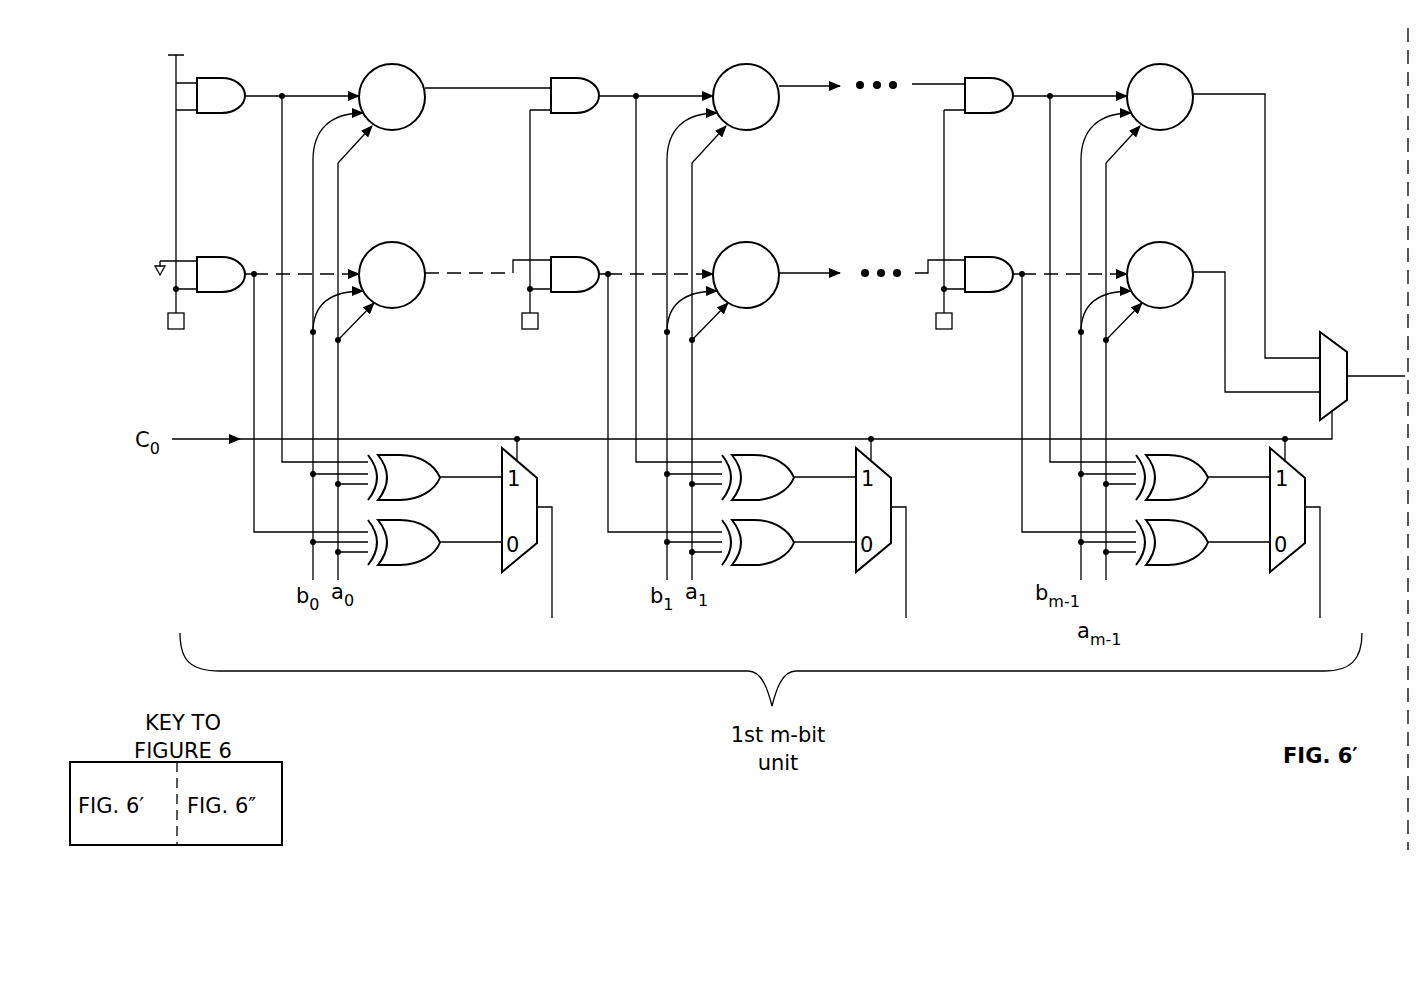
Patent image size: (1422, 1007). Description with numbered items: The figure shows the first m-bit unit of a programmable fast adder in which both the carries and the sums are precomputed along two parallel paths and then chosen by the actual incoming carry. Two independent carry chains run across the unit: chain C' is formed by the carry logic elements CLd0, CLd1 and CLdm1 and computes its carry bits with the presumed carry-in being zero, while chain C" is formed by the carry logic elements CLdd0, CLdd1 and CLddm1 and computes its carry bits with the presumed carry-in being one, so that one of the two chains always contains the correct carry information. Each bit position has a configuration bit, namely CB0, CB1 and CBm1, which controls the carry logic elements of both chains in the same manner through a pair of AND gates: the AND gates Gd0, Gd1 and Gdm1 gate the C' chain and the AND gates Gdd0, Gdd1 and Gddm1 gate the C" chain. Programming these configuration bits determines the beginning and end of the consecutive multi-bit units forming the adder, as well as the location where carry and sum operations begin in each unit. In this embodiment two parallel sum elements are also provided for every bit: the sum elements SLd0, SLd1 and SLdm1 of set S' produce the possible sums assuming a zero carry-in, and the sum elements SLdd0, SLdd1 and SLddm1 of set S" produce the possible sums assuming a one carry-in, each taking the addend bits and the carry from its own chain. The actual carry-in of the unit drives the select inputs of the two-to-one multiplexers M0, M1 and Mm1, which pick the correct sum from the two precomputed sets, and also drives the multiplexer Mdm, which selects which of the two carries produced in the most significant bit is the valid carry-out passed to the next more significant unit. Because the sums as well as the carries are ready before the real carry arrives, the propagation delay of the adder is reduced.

The AND gate G"0 Gdd0 is at (219, 78).
The AND gate G'0 Gd0 is at (187, 258).
The carry logic element CL"0 CLdd0 is at (392, 80).
The carry logic element CL'0 CLd0 is at (392, 258).
The configuration bit CB0 is at (179, 340).
The sum element SL"0 SLdd0 is at (420, 455).
The sum element SL'0 SLd0 is at (422, 556).
The multiplexer M0 is at (528, 549).
The AND gate G"1 Gdd1 is at (573, 78).
The AND gate G'1 Gd1 is at (575, 274).
The carry logic element CL"1 CLdd1 is at (746, 80).
The carry logic element CL'1 CLd1 is at (746, 258).
The configuration bit CB1 is at (533, 340).
The sum element SL"1 SLdd1 is at (774, 455).
The sum element SL'1 SLd1 is at (776, 556).
The multiplexer M1 is at (882, 549).
The AND gate G"m-1 Gddm1 is at (975, 74).
The AND gate G'm-1 Gdm1 is at (939, 258).
The carry logic element CL"m-1 CLddm1 is at (1155, 80).
The carry logic element CL'm-1 CLdm1 is at (1155, 258).
The configuration bit CBm-1 CBm1 is at (923, 337).
The sum element SL"m-1 SLddm1 is at (1184, 454).
The sum element SL'm-1 SLdm1 is at (1189, 556).
The multiplexer Mm-1 Mm1 is at (1306, 539).
The multiplexer M'm Mdm is at (1362, 390).